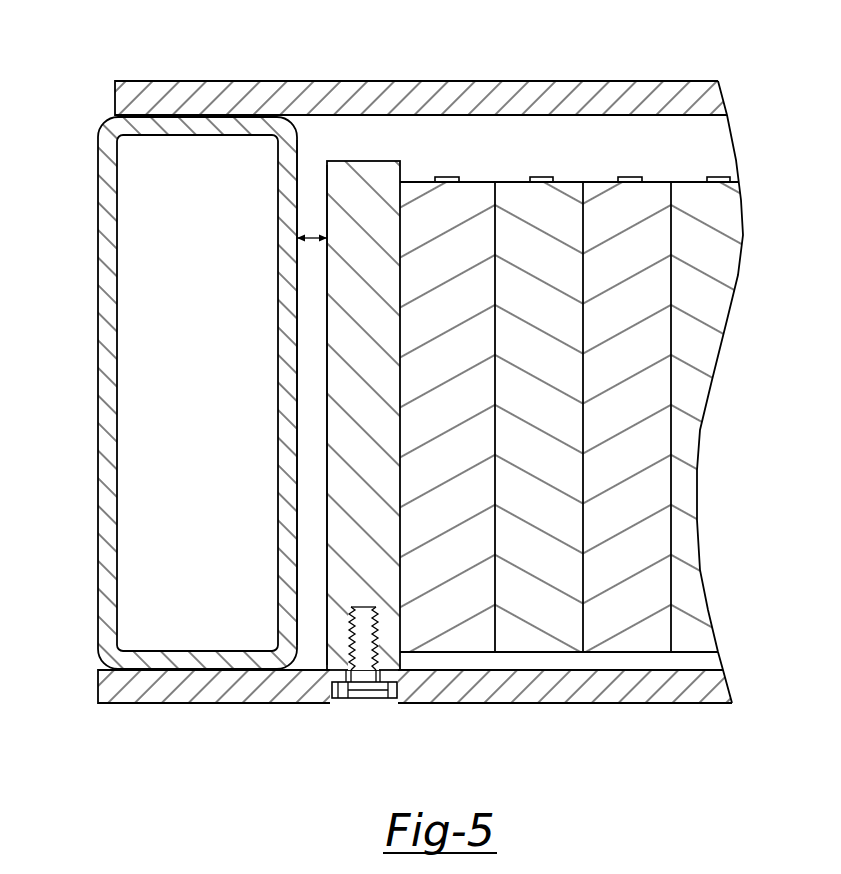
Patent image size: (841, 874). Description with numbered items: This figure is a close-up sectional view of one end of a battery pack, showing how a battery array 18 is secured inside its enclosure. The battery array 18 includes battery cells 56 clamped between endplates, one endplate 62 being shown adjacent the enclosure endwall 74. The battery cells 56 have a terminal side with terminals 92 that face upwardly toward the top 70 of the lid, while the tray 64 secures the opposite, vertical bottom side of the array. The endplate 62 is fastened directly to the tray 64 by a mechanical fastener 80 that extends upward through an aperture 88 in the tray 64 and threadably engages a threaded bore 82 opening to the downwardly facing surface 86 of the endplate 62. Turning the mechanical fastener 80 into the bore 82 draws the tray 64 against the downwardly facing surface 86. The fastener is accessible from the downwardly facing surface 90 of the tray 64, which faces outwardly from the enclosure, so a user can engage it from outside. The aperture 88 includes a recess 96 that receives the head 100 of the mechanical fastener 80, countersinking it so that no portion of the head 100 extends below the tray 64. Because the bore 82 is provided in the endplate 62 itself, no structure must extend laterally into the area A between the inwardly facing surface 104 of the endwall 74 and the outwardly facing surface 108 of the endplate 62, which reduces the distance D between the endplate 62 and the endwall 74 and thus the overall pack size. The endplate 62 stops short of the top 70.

The battery array 18 is at (483, 166).
The battery cells 56 is at (565, 507).
The endplate 62 is at (365, 173).
The tray 64 is at (161, 694).
The top 70 is at (522, 92).
The endwall 74 is at (100, 273).
The mechanical fastener 80 is at (300, 620).
The bore 82 is at (350, 625).
The downwardly facing surface 86 is at (374, 673).
The aperture 88 is at (372, 684).
The downwardly facing surface 90 is at (588, 694).
The terminals 92 is at (630, 176).
The recess 96 is at (338, 699).
The head 100 is at (367, 699).
The inwardly facing surface 104 is at (296, 334).
The outwardly facing surface 108 is at (327, 387).
The area A is at (311, 150).
The distance D is at (308, 236).